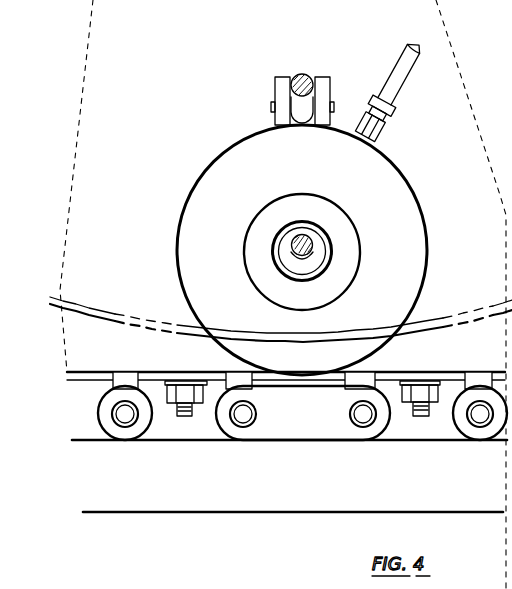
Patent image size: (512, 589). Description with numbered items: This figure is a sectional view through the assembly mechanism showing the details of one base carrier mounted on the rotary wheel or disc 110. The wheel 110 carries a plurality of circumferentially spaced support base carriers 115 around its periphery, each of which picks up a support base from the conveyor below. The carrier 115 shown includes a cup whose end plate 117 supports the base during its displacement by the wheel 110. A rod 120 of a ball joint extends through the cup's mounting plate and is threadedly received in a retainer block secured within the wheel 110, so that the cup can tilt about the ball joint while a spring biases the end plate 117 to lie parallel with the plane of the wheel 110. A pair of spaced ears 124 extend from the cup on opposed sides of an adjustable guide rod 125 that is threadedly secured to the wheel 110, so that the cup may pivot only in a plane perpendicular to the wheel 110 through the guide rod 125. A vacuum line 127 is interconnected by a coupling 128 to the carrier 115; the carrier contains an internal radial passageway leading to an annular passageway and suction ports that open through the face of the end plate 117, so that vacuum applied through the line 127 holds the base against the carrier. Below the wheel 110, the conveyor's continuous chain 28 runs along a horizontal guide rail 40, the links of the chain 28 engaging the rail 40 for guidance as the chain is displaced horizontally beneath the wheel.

The rotary wheel or disc 110 is at (76, 248).
The support base carrier 115 is at (182, 173).
The end plate 117 is at (410, 247).
The rod 120 is at (302, 232).
The ears 124 is at (281, 79).
The adjustable guide rod 125 is at (303, 73).
The vacuum line 127 is at (406, 73).
The coupling 128 is at (386, 131).
The continuous chain 28 is at (318, 420).
The horizontal guide rail 40 is at (313, 489).